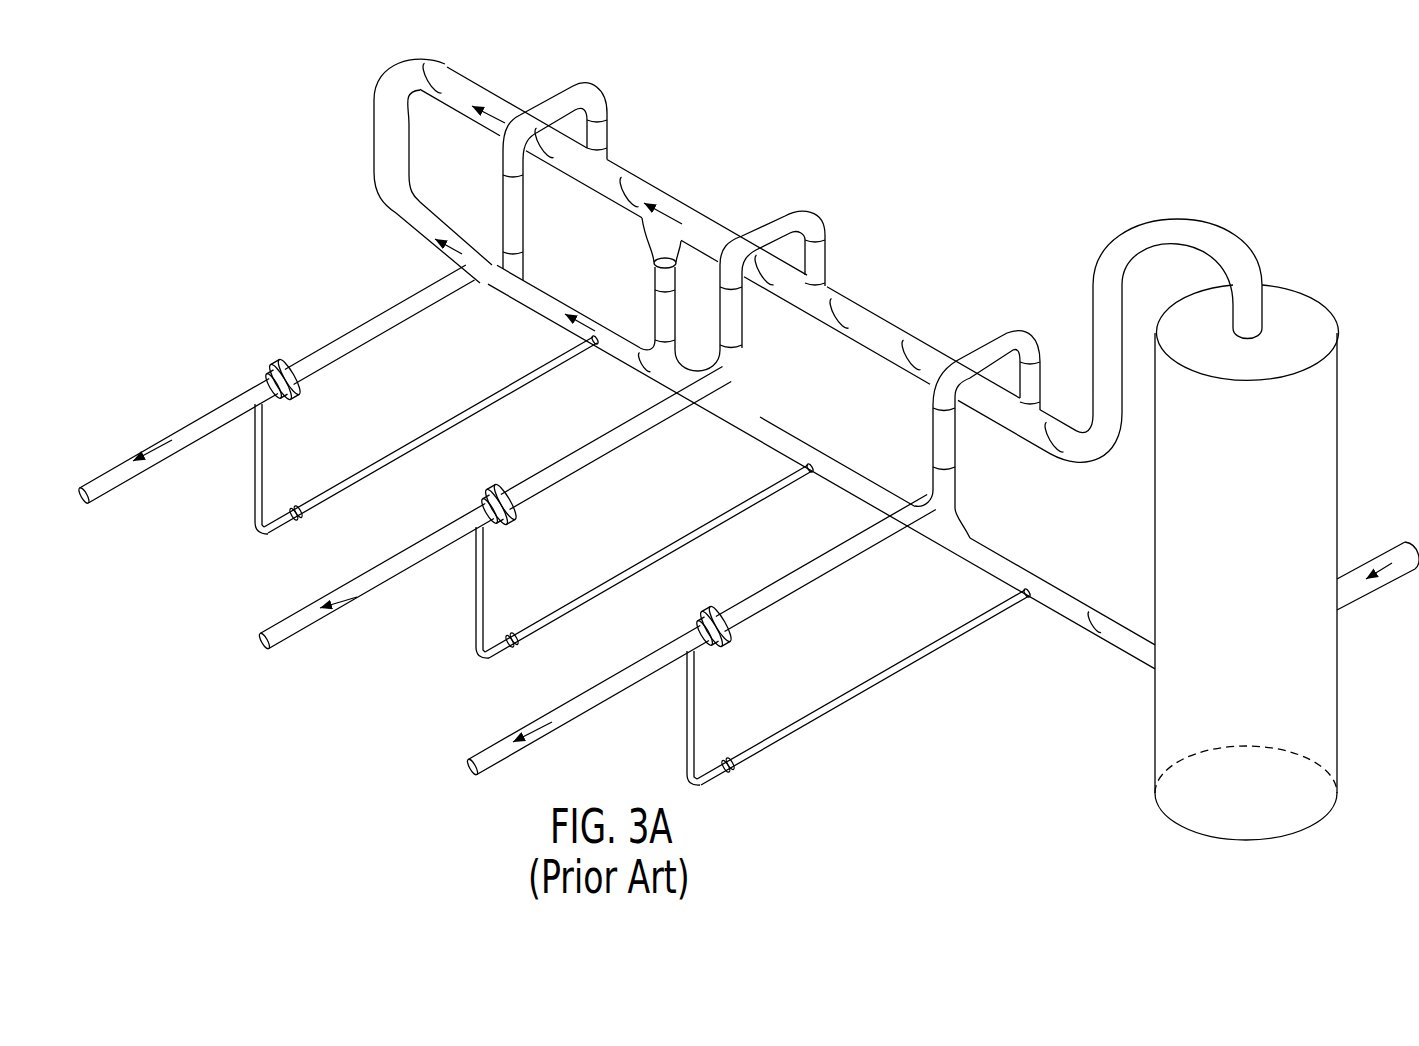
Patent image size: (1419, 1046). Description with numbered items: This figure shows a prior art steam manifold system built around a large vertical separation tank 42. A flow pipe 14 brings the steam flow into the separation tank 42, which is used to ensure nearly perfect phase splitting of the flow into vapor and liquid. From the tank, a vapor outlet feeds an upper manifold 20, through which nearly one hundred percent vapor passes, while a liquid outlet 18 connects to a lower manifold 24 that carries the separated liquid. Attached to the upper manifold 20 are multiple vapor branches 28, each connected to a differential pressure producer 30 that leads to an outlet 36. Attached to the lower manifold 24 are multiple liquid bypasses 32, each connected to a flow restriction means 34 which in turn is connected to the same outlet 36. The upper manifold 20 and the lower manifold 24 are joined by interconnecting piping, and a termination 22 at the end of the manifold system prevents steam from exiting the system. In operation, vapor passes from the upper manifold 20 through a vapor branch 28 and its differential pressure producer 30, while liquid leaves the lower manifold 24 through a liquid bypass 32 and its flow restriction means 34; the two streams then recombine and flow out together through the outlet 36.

The flow pipe 14 is at (1382, 590).
The liquid outlet 18 is at (1130, 650).
The upper manifold 20 is at (680, 205).
The termination 22 is at (378, 143).
The lower manifold 24 is at (563, 302).
The vapor branch 28 is at (553, 102).
The differential pressure producer 30 is at (297, 397).
The liquid bypass 32 is at (387, 463).
The flow restriction means 34 is at (297, 520).
The outlet 36 is at (112, 493).
The separation tank 42 is at (1155, 748).